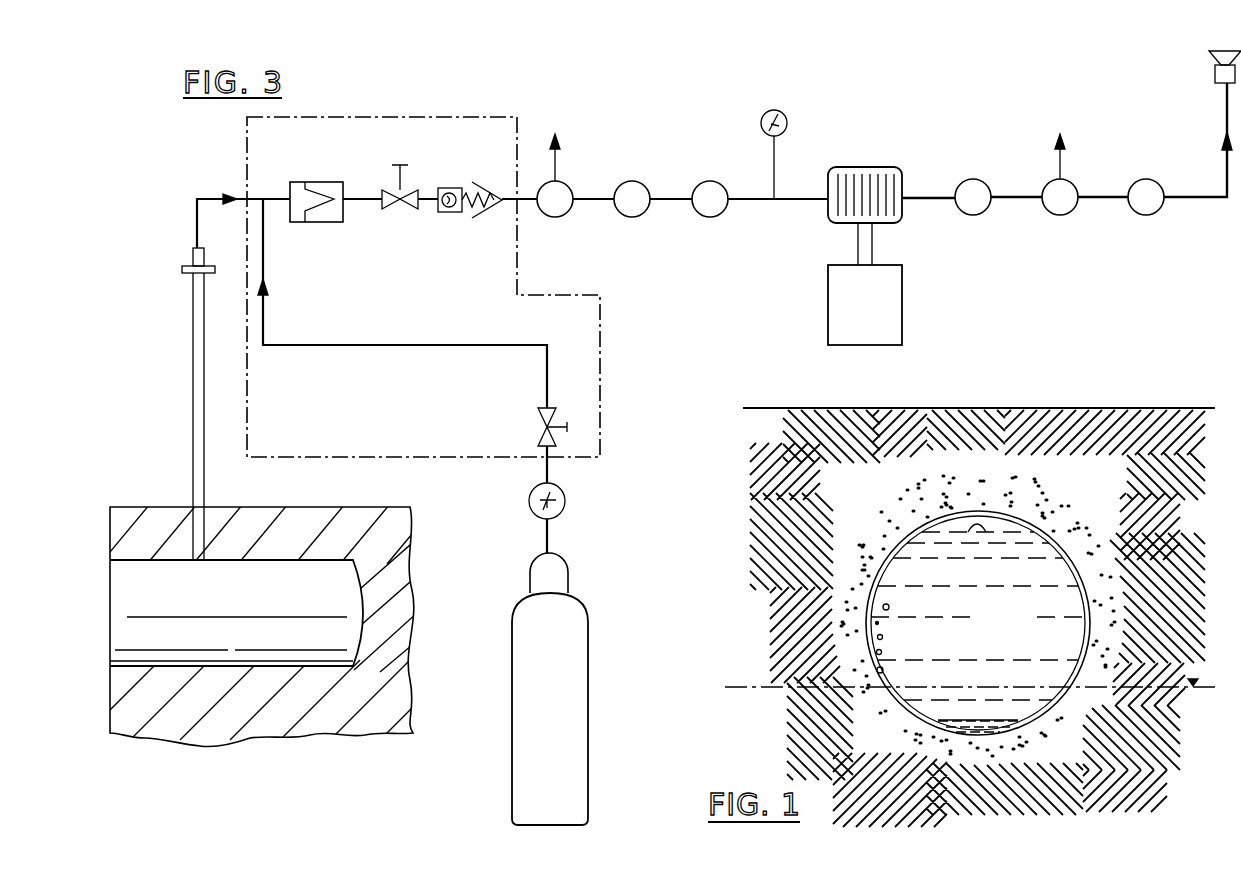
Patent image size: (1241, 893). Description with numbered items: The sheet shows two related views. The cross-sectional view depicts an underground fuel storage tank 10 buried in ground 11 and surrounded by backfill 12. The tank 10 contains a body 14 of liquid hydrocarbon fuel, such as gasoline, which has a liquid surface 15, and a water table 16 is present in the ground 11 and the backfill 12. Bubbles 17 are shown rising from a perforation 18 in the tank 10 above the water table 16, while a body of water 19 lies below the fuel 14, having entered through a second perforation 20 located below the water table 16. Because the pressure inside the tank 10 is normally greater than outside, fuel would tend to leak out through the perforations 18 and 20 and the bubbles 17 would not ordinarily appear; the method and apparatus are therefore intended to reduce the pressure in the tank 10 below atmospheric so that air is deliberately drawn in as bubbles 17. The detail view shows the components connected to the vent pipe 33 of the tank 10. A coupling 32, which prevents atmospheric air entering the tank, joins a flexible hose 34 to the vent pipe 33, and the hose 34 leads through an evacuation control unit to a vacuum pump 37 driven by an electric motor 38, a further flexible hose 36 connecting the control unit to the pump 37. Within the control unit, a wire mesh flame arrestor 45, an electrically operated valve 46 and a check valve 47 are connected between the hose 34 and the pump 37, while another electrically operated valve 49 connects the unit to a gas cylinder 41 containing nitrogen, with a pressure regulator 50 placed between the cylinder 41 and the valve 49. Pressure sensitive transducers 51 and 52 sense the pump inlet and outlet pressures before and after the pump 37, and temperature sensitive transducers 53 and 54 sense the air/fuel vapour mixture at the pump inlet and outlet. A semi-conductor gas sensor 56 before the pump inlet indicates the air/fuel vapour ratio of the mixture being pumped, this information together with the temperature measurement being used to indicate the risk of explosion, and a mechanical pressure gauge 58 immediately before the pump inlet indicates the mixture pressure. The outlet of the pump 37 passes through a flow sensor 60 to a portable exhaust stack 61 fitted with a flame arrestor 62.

In FIG. 3, the underground fuel storage tank 10 is at (324, 564).
In FIG. 1, the underground fuel storage tank 10 is at (889, 556).
In FIG. 1, the ground 11 is at (1000, 425).
In FIG. 1, the backfill 12 is at (935, 488).
In FIG. 1, the body of liquid hydrocarbon fuel 14 is at (978, 616).
In FIG. 1, the liquid surface 15 is at (972, 523).
In FIG. 1, the water table 16 is at (760, 687).
In FIG. 1, the bubbles 17 is at (886, 660).
In FIG. 1, the perforation 18 is at (878, 680).
In FIG. 1, the body of water 19 is at (962, 682).
In FIG. 1, the perforation 20 is at (990, 738).
In FIG. 3, the coupling 32 is at (191, 262).
In FIG. 3, the vent pipe 33 is at (193, 405).
In FIG. 3, the flexible hose 34 is at (207, 197).
In FIG. 3, the flexible hose 36 is at (418, 117).
In FIG. 3, the vacuum pump 37 is at (838, 214).
In FIG. 3, the electric motor 38 is at (838, 290).
In FIG. 3, the gas cylinder 41 is at (524, 617).
In FIG. 3, the wire mesh flame arrestor 45 is at (320, 182).
In FIG. 3, the electrically operated valve 46 is at (396, 189).
In FIG. 3, the check valve 47 is at (449, 188).
In FIG. 3, the electrically operated valve 49 is at (536, 431).
In FIG. 3, the pressure regulator 50 is at (529, 501).
In FIG. 3, the pressure sensitive transducer 51 is at (563, 182).
In FIG. 3, the pressure sensitive transducer 52 is at (1048, 181).
In FIG. 3, the temperature sensitive transducer 53 is at (630, 181).
In FIG. 3, the temperature sensitive transducer 54 is at (965, 180).
In FIG. 3, the semi-conductor gas sensor 56 is at (706, 181).
In FIG. 3, the mechanical pressure gauge 58 is at (761, 123).
In FIG. 3, the flow sensor 60 is at (1140, 179).
In FIG. 3, the portable exhaust stack 61 is at (1222, 122).
In FIG. 3, the flame arrestor 62 is at (1215, 74).